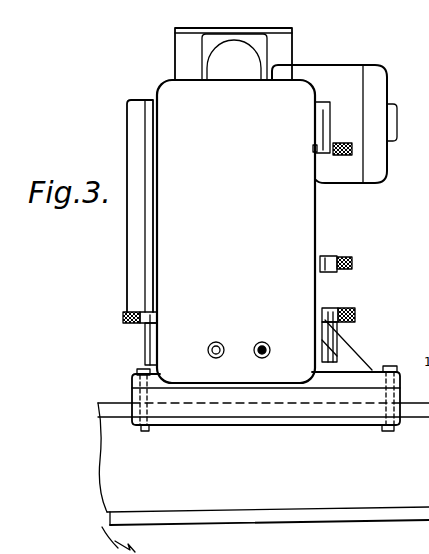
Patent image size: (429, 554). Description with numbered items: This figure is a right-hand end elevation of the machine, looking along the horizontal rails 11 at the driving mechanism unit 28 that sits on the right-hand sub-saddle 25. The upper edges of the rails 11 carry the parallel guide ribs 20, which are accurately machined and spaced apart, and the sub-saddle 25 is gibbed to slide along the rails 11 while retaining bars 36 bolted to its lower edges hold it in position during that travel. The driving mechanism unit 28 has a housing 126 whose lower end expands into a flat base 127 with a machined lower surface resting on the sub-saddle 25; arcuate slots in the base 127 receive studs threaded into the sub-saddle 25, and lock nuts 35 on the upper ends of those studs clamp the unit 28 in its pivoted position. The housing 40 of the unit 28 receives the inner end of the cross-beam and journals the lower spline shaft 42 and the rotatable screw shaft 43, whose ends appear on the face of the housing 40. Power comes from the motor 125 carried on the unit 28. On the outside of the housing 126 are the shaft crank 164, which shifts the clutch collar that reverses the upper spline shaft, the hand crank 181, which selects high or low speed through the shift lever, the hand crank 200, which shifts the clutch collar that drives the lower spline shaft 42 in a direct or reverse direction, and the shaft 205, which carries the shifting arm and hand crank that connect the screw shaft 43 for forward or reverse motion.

The horizontal rails 11 is at (290, 502).
The parallel guide ribs 20 is at (116, 412).
The right-hand sub-saddle 25 is at (356, 407).
The driving mechanism unit 28 is at (318, 227).
The lock nuts 35 is at (137, 371).
The retaining bars 36 is at (216, 425).
The housing 40 is at (236, 231).
The lower spline shaft 42 is at (263, 341).
The rotatable screw shaft 43 is at (216, 341).
The motor 125 is at (347, 70).
The housing 126 is at (165, 92).
The flat base 127 is at (378, 372).
The shaft crank 164 is at (330, 130).
The hand crank 181 is at (345, 256).
The hand crank 200 is at (338, 331).
The shaft 205 is at (145, 343).